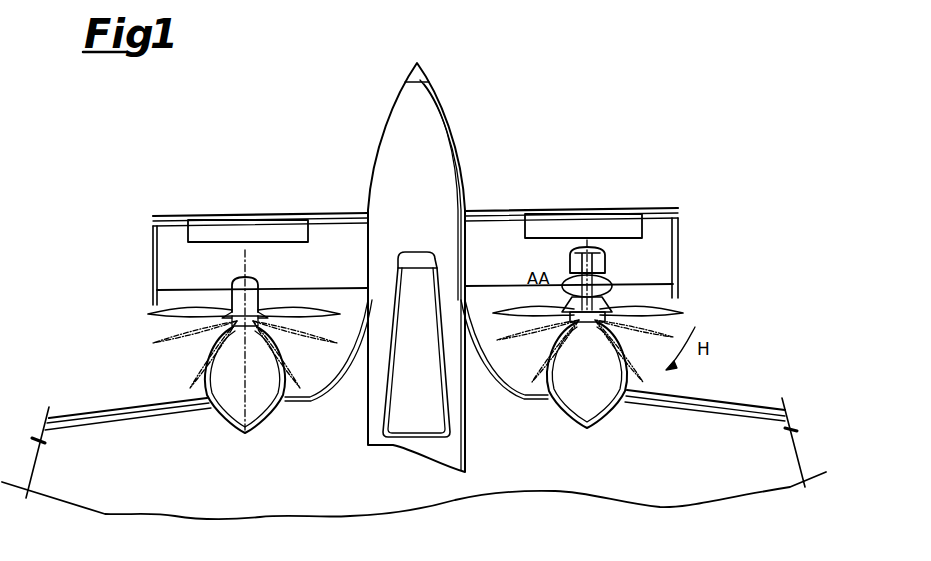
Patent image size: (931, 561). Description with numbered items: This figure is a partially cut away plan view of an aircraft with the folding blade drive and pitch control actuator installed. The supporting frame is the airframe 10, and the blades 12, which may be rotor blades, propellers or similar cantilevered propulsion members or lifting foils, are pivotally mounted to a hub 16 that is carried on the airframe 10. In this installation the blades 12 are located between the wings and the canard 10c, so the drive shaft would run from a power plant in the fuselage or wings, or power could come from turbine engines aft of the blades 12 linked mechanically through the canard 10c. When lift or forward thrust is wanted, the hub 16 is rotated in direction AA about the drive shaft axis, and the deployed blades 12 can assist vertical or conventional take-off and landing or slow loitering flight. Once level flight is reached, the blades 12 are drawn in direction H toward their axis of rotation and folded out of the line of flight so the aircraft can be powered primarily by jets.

The airframe 10 is at (748, 396).
The canard 10c is at (657, 243).
The blades 12 is at (680, 313).
The hub 16 is at (593, 313).